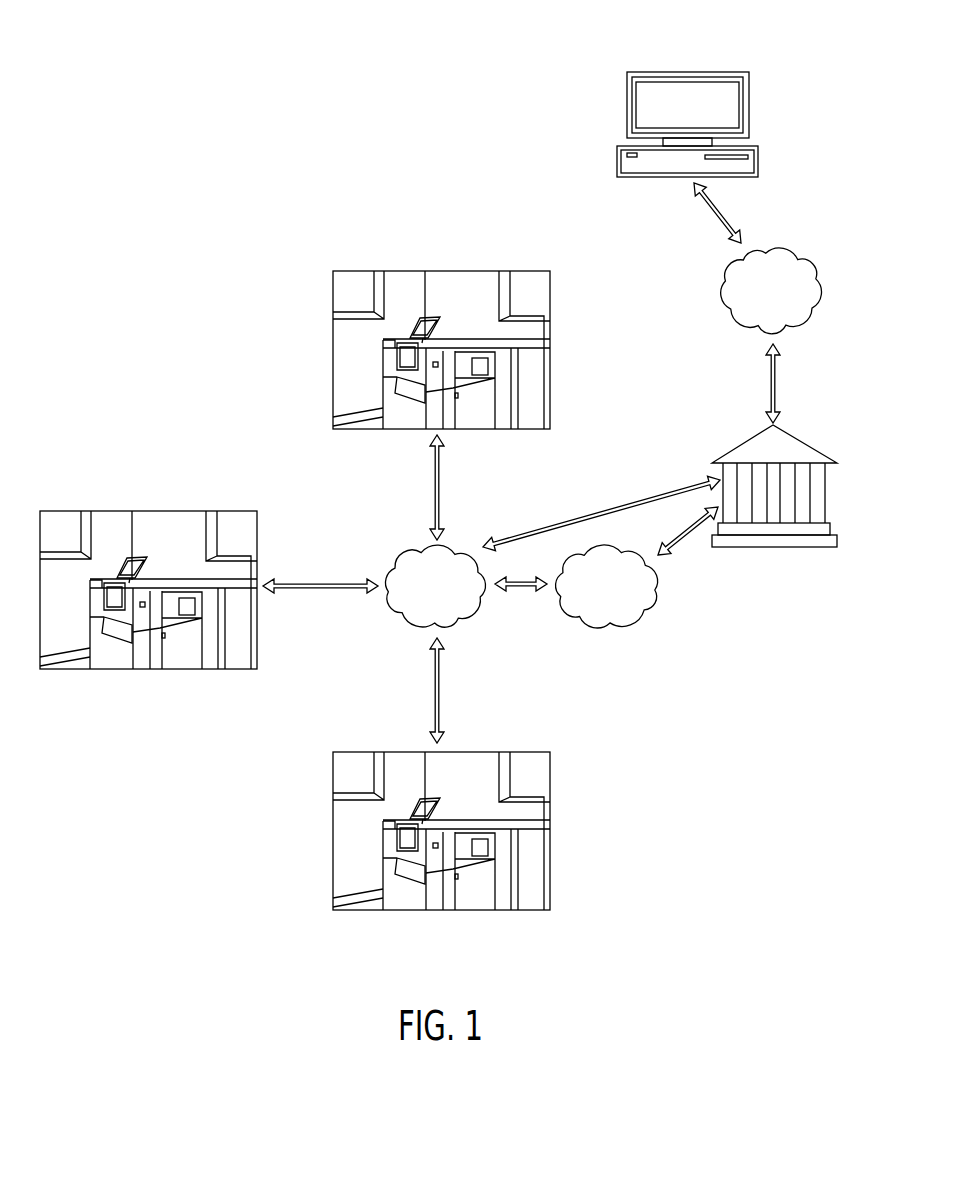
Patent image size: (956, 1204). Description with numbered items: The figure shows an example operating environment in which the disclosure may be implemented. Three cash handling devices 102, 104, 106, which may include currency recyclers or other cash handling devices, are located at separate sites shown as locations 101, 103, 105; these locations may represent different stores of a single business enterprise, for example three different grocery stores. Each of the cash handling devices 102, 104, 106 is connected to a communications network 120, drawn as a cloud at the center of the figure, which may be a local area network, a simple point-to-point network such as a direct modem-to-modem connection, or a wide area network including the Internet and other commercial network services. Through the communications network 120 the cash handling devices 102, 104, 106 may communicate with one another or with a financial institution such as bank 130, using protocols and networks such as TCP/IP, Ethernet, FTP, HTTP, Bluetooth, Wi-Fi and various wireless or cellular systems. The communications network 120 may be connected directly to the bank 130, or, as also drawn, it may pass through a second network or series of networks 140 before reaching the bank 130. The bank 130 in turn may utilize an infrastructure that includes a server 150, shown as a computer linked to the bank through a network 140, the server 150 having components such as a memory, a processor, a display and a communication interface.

The location 101 is at (453, 280).
The cash handling device 102 is at (402, 417).
The location 103 is at (163, 518).
The cash handling device 104 is at (108, 657).
The location 105 is at (342, 822).
The cash handling device 106 is at (407, 900).
The communications network 120 is at (467, 622).
The bank 130 is at (748, 440).
The series of networks 140 is at (610, 633).
The server 150 is at (718, 72).